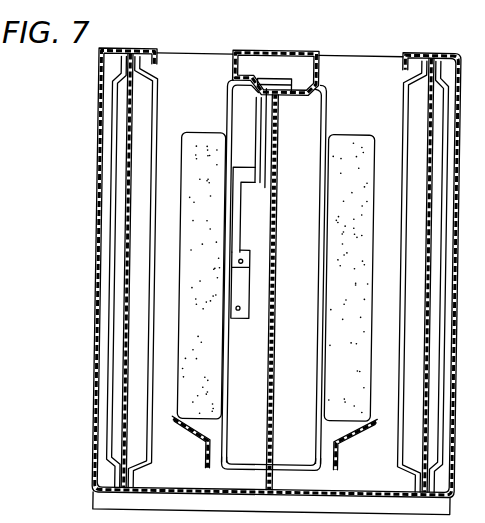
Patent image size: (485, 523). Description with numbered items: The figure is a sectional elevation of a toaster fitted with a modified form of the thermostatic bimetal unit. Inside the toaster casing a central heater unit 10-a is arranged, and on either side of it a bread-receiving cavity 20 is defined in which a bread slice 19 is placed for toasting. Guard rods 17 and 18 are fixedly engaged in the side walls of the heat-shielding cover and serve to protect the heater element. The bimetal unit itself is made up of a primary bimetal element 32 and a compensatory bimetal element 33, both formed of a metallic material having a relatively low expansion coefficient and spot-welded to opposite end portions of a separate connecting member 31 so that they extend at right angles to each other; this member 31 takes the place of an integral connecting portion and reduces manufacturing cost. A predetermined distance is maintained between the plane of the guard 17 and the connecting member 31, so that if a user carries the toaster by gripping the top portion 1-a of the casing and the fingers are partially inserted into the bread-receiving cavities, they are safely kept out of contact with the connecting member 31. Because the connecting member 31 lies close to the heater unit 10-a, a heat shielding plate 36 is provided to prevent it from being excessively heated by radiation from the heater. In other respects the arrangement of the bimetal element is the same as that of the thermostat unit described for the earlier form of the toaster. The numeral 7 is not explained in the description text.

The bread-receiving cavity 20 is at (172, 61).
The toaster body cover portion 1-a is at (250, 48).
The compensatory bimetal element 33 is at (290, 75).
The guard rod 17 is at (228, 86).
The guard rod 18 is at (329, 89).
The heater unit 10-a is at (280, 322).
The connecting member 31 is at (257, 115).
The heat shielding plate 36 is at (277, 145).
The primary bimetal element 32 is at (242, 193).
The mounting bracket 7 is at (246, 281).
The bread slice 19 is at (189, 190).